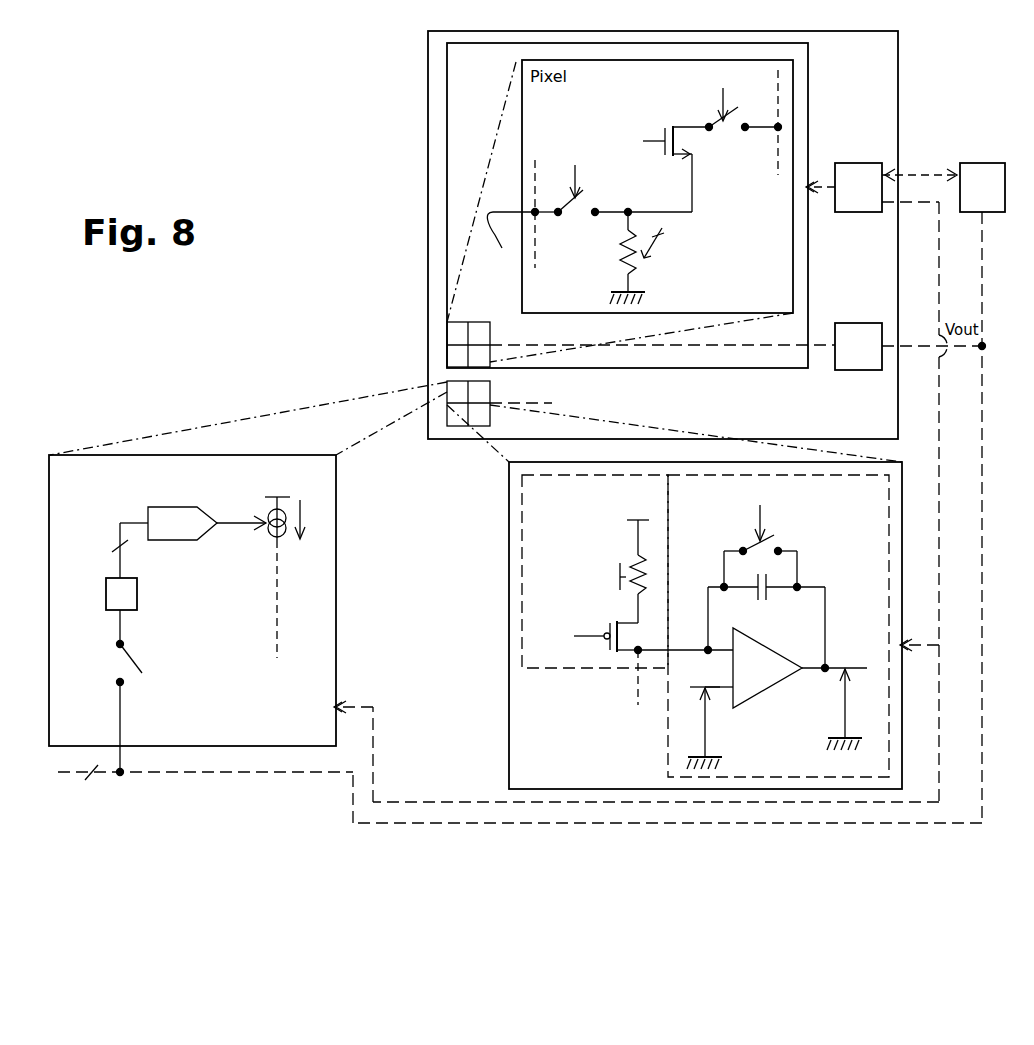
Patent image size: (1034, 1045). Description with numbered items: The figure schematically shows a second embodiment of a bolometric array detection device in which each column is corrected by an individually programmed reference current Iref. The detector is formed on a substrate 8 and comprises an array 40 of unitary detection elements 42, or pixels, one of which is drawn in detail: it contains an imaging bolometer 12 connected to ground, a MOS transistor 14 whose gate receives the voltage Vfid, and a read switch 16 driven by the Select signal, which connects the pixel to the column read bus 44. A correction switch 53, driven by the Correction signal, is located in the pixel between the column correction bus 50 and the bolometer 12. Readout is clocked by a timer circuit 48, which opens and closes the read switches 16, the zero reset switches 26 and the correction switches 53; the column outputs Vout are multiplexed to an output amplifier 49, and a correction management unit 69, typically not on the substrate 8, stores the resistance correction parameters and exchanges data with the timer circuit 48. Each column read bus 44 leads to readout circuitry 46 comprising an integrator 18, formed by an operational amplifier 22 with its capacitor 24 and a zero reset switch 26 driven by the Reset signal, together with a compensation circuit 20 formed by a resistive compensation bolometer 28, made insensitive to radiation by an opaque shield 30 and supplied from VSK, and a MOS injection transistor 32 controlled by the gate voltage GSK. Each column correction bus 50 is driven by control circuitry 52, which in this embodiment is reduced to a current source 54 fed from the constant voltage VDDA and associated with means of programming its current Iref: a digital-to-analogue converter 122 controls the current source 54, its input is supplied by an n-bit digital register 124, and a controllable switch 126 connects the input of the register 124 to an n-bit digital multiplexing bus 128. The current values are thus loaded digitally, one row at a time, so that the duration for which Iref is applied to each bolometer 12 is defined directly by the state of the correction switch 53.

The substrate 8 is at (898, 126).
The array 40 is at (808, 72).
The imaging bolometer 12 is at (640, 265).
The MOS transistor 14 is at (680, 127).
The read switch 16 is at (727, 117).
The correction switch 53 is at (570, 205).
The unitary detection element 42 is at (511, 242).
The column correction bus 50 is at (535, 240).
The column read bus 44 is at (778, 157).
The timer circuit 48 is at (858, 163).
The correction management unit 69 is at (988, 163).
The output amplifier 49 is at (852, 323).
The control circuitry 52 is at (192, 455).
The digital-to-analogue converter 122 is at (180, 540).
The current source 54 is at (268, 512).
The digital register 124 is at (137, 595).
The controllable switch 126 is at (135, 665).
The digital multiplexing bus 128 is at (158, 772).
The readout circuitry 46 is at (902, 525).
The compensation circuit 20 is at (522, 585).
The opaque shield 30 is at (626, 565).
The resistive compensation bolometer 28 is at (638, 600).
The MOS injection transistor 32 is at (609, 627).
The integrator 18 is at (668, 732).
The operational amplifier 22 is at (770, 680).
The capacitor 24 is at (770, 595).
The zero reset switch 26 is at (758, 540).